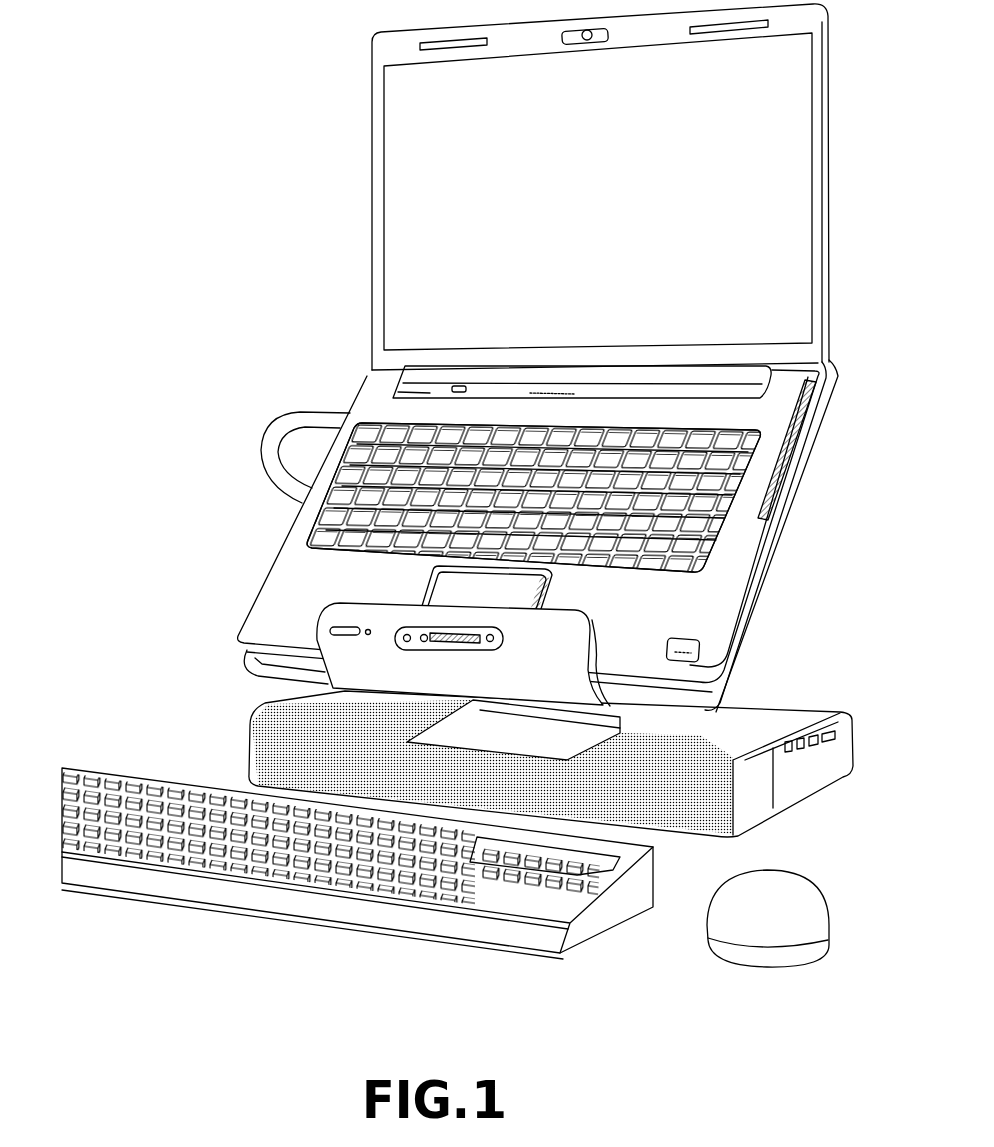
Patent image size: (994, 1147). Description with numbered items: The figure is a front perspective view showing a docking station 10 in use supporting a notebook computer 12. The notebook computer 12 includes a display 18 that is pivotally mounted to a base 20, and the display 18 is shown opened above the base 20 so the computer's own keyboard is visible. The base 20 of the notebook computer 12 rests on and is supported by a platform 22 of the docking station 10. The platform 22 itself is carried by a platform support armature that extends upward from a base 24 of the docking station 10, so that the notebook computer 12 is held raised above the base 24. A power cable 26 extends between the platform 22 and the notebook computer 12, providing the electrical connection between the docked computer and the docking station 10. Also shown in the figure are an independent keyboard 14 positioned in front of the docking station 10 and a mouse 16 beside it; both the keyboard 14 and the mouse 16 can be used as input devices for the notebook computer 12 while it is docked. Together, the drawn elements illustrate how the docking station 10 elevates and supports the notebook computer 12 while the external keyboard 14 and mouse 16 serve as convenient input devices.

The docking station 10 is at (806, 699).
The notebook computer 12 is at (264, 541).
The independent keyboard 14 is at (254, 924).
The mouse 16 is at (752, 983).
The display 18 is at (375, 152).
The base 20 is at (372, 388).
The platform 22 is at (262, 660).
The base 24 is at (742, 718).
The power cable 26 is at (267, 445).